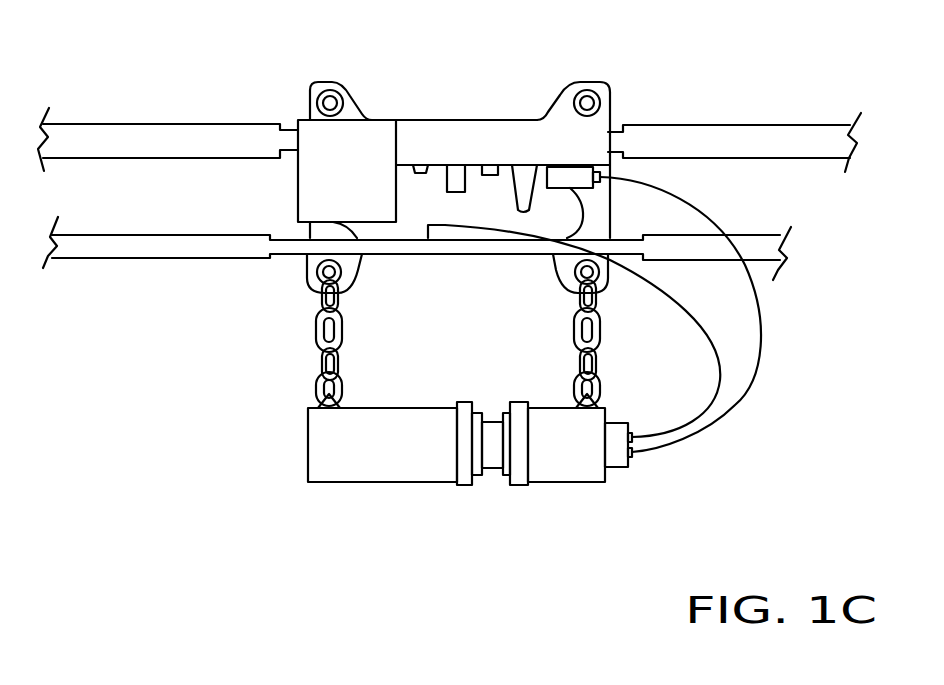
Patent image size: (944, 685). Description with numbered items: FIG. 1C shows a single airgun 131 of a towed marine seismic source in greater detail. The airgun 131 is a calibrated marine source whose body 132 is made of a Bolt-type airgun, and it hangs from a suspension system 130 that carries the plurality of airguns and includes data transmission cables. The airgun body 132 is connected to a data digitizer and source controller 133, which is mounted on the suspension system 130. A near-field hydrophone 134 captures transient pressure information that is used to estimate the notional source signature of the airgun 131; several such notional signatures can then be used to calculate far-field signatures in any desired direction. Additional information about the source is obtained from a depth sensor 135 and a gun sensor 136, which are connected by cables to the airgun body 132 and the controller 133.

The suspension system 130 is at (135, 125).
The airgun 131 is at (360, 558).
The airgun body 132 is at (427, 482).
The data digitizer and source controller 133 is at (377, 197).
The near-field hydrophone 134 is at (443, 165).
The depth sensor 135 is at (423, 173).
The gun sensor 136 is at (628, 463).